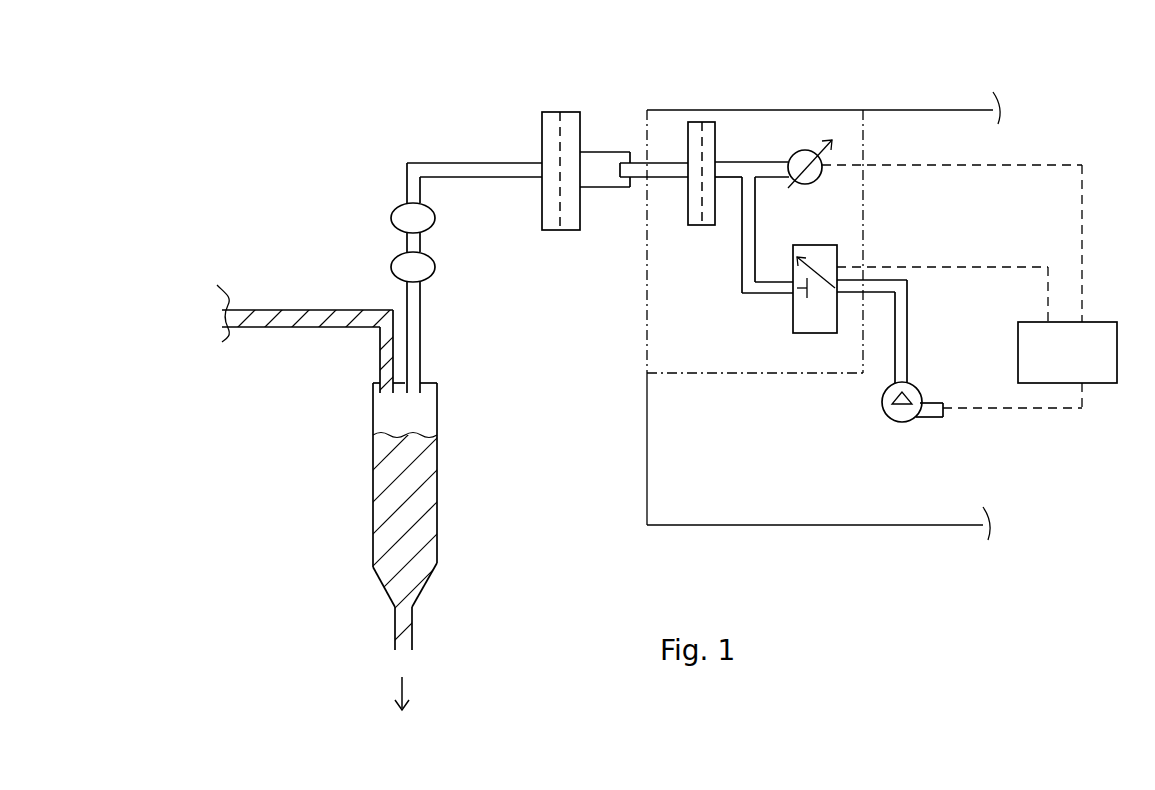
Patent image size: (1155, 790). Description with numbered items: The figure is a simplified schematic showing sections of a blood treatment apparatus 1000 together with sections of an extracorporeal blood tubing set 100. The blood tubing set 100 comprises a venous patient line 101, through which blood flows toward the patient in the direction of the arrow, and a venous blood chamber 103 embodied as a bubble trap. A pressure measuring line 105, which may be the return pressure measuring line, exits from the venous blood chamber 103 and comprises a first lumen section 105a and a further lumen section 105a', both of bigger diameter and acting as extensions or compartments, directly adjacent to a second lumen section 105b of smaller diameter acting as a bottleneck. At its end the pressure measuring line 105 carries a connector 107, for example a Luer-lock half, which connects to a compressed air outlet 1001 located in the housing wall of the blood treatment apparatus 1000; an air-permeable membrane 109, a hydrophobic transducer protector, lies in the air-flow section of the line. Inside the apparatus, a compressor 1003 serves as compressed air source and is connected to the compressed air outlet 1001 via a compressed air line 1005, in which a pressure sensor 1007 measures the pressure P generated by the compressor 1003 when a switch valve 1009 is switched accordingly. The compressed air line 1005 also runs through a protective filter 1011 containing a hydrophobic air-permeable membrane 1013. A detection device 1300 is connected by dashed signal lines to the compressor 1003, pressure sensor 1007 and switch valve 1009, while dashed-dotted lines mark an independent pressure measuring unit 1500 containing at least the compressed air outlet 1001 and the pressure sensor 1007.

The blood tubing set 100 is at (304, 420).
The venous patient line 101 is at (307, 312).
The venous blood chamber 103 is at (423, 525).
The pressure measuring line 105 is at (373, 234).
The first lumen section 105a is at (350, 254).
The further lumen section 105a' is at (345, 187).
The second lumen section 105b is at (393, 247).
The connector 107 is at (603, 187).
The air-permeable membrane 109 is at (560, 225).
The compressed air outlet 1001 is at (635, 170).
The compressor 1003 is at (887, 420).
The compressed air line 1005 is at (747, 165).
The pressure sensor 1007 is at (793, 145).
The switch valve 1009 is at (800, 332).
The protective filter 1011 is at (693, 225).
The air-permeable membrane 1013 is at (684, 213).
The blood treatment apparatus 1000 is at (977, 239).
The detection device 1300 is at (1067, 352).
The independent pressure measuring unit 1500 is at (762, 328).